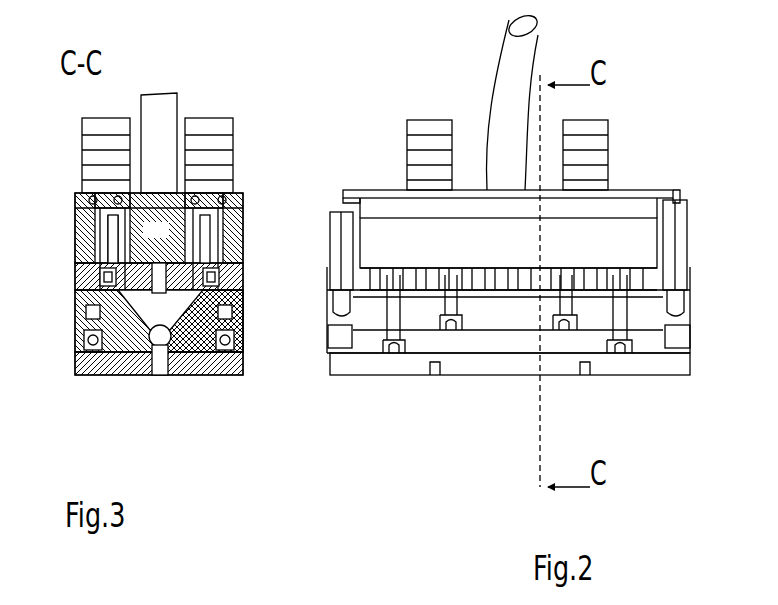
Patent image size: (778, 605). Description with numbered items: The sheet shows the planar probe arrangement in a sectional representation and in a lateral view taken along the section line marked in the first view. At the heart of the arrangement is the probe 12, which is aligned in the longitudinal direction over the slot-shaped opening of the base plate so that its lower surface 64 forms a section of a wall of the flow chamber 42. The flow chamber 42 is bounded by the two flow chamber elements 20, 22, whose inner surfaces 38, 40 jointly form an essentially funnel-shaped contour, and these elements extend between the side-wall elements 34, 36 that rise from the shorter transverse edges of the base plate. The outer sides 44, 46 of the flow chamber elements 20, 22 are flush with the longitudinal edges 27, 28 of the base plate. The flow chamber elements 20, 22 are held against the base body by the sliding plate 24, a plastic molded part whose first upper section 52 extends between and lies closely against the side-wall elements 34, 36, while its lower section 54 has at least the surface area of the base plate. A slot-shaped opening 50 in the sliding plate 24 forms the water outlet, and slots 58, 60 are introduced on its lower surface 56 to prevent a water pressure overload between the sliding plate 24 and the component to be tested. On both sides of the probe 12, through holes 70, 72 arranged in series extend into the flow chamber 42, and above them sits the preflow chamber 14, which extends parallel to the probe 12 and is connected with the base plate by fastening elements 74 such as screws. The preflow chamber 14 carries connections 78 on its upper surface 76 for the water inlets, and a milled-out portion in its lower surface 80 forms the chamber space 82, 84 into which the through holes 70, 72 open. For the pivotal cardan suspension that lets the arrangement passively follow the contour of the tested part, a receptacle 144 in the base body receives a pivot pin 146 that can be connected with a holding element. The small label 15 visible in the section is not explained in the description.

In FIG. 2, the probe 12 is at (355, 190).
In FIG. 2, the preflow chamber 14 is at (636, 190).
In FIG. 3, the center block 15 is at (157, 178).
In FIG. 3, the flow chamber element 20 is at (74, 300).
In FIG. 3, the flow chamber element 22 is at (246, 300).
In FIG. 3, the sliding plate 24 is at (78, 372).
In FIG. 2, the sliding plate 24 is at (521, 378).
In FIG. 3, the longitudinal edge 27 is at (74, 266).
In FIG. 3, the longitudinal edge 28 is at (245, 270).
In FIG. 2, the side-wall element 34 is at (328, 297).
In FIG. 2, the side-wall element 36 is at (688, 292).
In FIG. 3, the inner surface 38 is at (108, 376).
In FIG. 3, the inner surface 40 is at (195, 372).
In FIG. 3, the flow chamber 42 is at (185, 372).
In FIG. 2, the flow chamber 42 is at (378, 312).
In FIG. 3, the outer side 44 is at (82, 327).
In FIG. 3, the outer side 46 is at (245, 312).
In FIG. 3, the slot-shaped opening 50 is at (160, 350).
In FIG. 2, the first upper section 52 is at (488, 372).
In FIG. 2, the lower section 54 is at (465, 372).
In FIG. 2, the lower surface 56 is at (380, 375).
In FIG. 2, the slot 58 is at (428, 365).
In FIG. 2, the slot 60 is at (585, 375).
In FIG. 3, the lower surface 64 is at (150, 356).
In FIG. 2, the lower surface 64 is at (648, 294).
In FIG. 3, the through hole 70 is at (88, 205).
In FIG. 3, the through hole 72 is at (233, 208).
In FIG. 2, the fastening element 74 is at (340, 198).
In FIG. 2, the upper surface 76 is at (393, 190).
In FIG. 2, the connection 78 is at (438, 128).
In FIG. 3, the lower surface 80 is at (78, 258).
In FIG. 2, the chamber space 82 is at (424, 245).
In FIG. 2, the chamber space 84 is at (463, 245).
In FIG. 2, the receptacle 144 is at (683, 372).
In FIG. 2, the pivot pin 146 is at (332, 345).